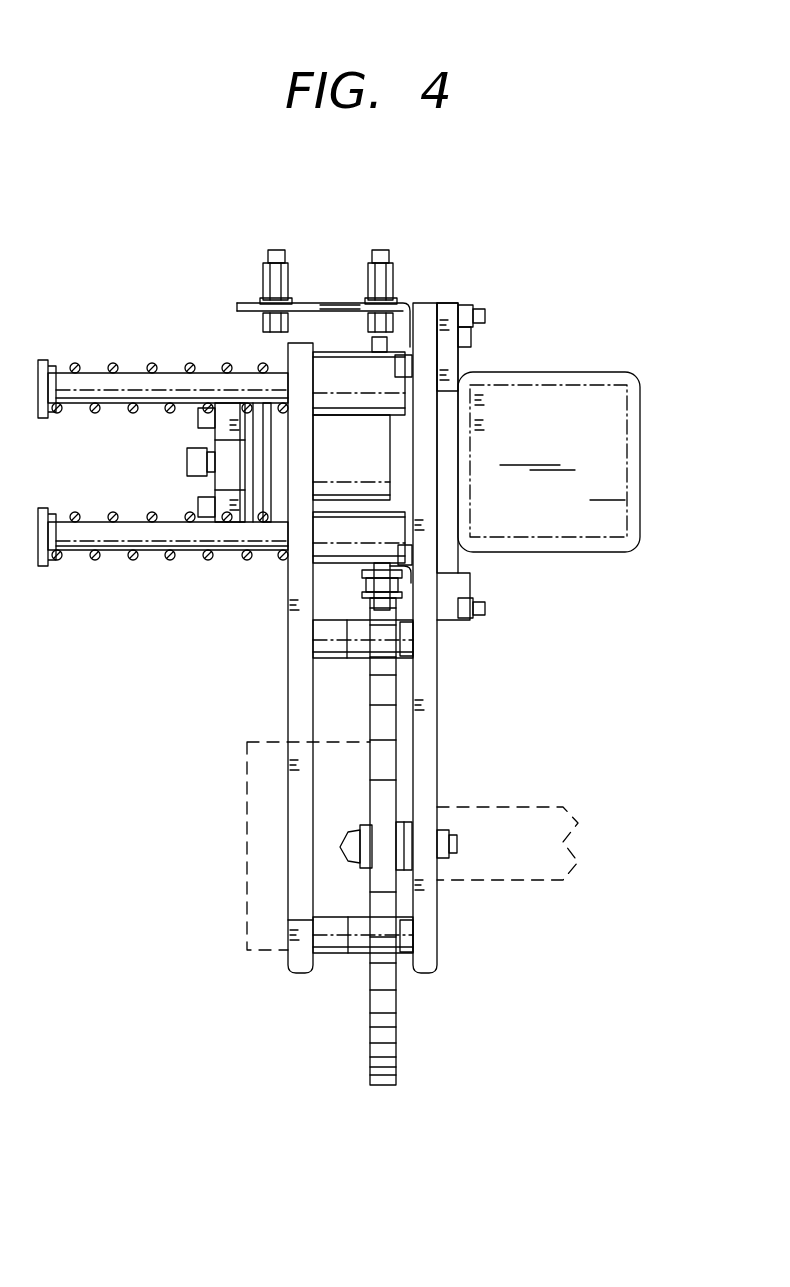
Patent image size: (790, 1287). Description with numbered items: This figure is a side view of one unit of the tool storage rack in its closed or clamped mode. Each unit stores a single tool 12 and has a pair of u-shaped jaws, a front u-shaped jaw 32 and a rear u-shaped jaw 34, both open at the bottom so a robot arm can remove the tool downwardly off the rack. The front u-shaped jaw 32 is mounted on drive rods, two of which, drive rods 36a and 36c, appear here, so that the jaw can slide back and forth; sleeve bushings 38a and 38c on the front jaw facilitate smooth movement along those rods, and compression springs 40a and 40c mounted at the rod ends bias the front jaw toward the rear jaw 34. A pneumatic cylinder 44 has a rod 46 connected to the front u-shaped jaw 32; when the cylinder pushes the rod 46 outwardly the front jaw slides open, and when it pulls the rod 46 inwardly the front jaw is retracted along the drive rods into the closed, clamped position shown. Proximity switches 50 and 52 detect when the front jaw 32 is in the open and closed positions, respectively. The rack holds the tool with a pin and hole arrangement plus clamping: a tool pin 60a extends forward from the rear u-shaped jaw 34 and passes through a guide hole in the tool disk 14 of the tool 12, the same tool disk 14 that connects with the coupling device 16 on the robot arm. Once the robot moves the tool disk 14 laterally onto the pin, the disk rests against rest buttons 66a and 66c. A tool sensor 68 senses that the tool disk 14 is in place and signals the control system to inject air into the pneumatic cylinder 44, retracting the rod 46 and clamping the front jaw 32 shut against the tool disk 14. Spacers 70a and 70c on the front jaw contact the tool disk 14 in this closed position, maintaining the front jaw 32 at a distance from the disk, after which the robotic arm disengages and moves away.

The tool 12 is at (523, 855).
The tool disk 14 is at (385, 1020).
The coupling device 16 is at (270, 923).
The front u-shaped jaw 32 is at (298, 707).
The rear u-shaped jaw 34 is at (430, 763).
The drive rod 36a is at (88, 386).
The drive rod 36c is at (70, 536).
The sleeve bushing 38a is at (335, 383).
The sleeve bushing 38c is at (340, 536).
The compression spring 40a is at (152, 372).
The compression spring 40c is at (130, 555).
The pneumatic cylinder 44 is at (363, 455).
The rod 46 is at (200, 462).
The proximity switch 50 is at (290, 250).
The proximity switch 52 is at (390, 250).
The tool pin 60a is at (340, 850).
The rest button 66a is at (403, 933).
The rest button 66c is at (403, 643).
The tool sensor 68 is at (390, 610).
The spacer 70a is at (337, 955).
The spacer 70c is at (330, 633).